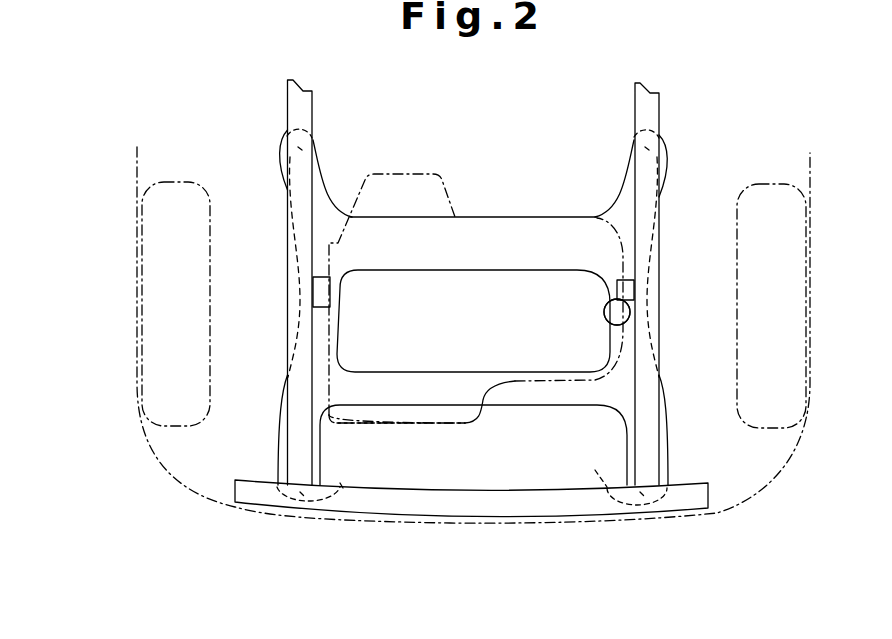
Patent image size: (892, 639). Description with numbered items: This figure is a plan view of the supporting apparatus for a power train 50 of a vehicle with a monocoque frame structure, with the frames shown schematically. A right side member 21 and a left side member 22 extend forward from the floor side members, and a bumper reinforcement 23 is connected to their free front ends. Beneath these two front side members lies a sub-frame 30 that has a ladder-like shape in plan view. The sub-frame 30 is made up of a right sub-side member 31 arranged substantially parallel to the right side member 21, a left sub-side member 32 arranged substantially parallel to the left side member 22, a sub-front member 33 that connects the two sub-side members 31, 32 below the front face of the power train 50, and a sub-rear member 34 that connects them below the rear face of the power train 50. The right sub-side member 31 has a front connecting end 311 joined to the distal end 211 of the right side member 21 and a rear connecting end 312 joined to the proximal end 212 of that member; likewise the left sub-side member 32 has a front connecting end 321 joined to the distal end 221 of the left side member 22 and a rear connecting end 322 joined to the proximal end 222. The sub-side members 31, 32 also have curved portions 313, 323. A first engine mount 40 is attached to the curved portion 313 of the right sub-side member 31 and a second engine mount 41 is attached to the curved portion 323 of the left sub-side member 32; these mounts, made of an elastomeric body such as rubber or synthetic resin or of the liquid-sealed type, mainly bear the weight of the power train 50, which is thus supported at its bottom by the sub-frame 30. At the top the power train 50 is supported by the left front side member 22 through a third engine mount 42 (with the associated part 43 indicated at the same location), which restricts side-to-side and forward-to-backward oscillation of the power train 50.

The right side member 21 is at (287, 112).
The left side member 22 is at (660, 115).
The bumper reinforcement 23 is at (244, 506).
The distal end of right side member 211 is at (292, 504).
The distal end of left side member 221 is at (651, 478).
The proximal end of right side member 212 is at (287, 137).
The proximal end of left side member 222 is at (660, 140).
The sub-frame 30 is at (279, 462).
The right sub-side member 31 is at (281, 420).
The left sub-side member 32 is at (668, 418).
The front connecting end of right sub-side member 311 is at (360, 469).
The front connecting end of left sub-side member 321 is at (576, 471).
The rear connecting end of right sub-side member 312 is at (313, 143).
The rear connecting end of left sub-side member 322 is at (634, 140).
The curved portion of right sub-side member 313 is at (291, 329).
The curved portion of left sub-side member 323 is at (660, 304).
The sub-front member 33 is at (446, 387).
The sub-rear member 34 is at (505, 219).
The first engine mount 40 is at (322, 292).
The second engine mount 41 is at (615, 290).
The third engine mount 42 is at (604, 315).
The nut 43 is at (572, 337).
The power train 50 is at (402, 172).